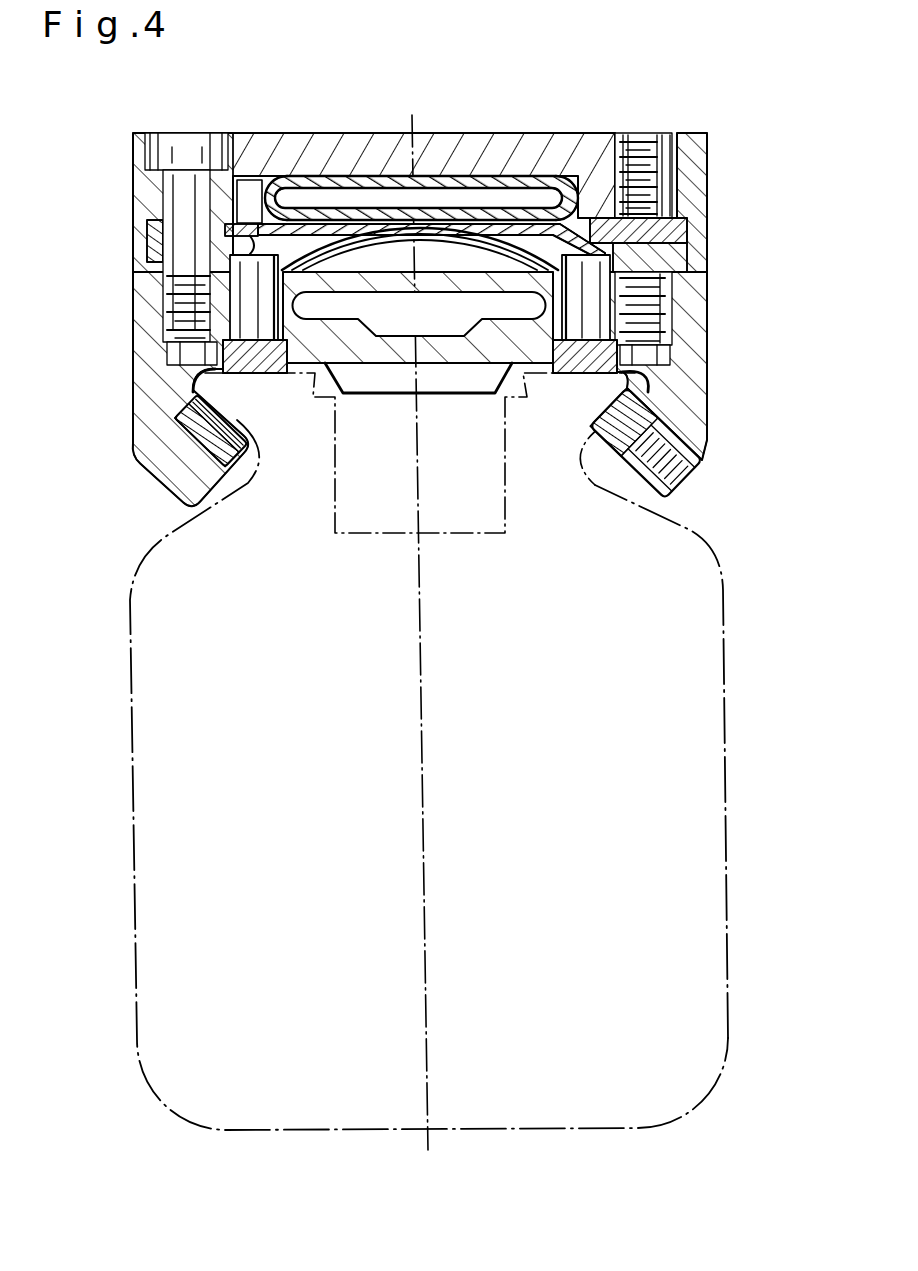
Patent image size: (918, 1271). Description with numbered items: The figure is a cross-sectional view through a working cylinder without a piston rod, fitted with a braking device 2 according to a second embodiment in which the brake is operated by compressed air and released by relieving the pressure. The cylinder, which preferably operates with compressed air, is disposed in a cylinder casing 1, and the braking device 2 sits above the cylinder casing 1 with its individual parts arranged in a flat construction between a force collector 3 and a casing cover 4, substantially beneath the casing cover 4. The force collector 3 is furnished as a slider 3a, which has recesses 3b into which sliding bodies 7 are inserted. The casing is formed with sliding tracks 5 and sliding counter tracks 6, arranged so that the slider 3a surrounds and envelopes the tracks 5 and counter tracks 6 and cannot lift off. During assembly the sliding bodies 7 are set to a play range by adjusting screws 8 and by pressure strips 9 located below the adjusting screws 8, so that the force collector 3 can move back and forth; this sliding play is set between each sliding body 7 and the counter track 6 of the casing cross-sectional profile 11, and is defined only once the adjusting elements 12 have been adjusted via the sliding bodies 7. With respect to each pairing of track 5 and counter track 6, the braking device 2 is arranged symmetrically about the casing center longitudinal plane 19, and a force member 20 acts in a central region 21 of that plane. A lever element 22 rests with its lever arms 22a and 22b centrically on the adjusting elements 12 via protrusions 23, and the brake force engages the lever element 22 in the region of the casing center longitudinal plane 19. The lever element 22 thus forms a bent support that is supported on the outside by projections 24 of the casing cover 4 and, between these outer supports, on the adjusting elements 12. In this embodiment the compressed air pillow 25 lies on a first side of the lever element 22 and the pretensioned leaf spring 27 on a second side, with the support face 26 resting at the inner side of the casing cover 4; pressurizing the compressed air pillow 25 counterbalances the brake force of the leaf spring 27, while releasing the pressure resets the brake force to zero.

The cylinder casing 1 is at (732, 811).
The braking device 2 is at (441, 280).
The force collector 3 is at (457, 416).
The slider 3a is at (672, 381).
The recesses 3b is at (499, 362).
The casing cover 4 is at (145, 188).
The sliding tracks 5 is at (570, 363).
The sliding counter tracks 6 is at (575, 422).
The sliding bodies 7 is at (190, 407).
The adjusting screws 8 is at (661, 458).
The pressure strips 9 is at (450, 443).
The casing cross-sectional profile 11 is at (724, 712).
The adjusting elements 12 is at (245, 288).
The casing center longitudinal plane 19 is at (412, 130).
The force member 20 is at (407, 135).
The central region 21 is at (392, 210).
The lever element 22 is at (418, 163).
The lever arm 22a is at (222, 243).
The lever arm 22b is at (610, 243).
The protrusions 23 is at (415, 204).
The projections 24 is at (255, 228).
The compressed air pillow 25 is at (333, 176).
The support face 26 is at (437, 176).
The leaf spring 27 is at (300, 245).